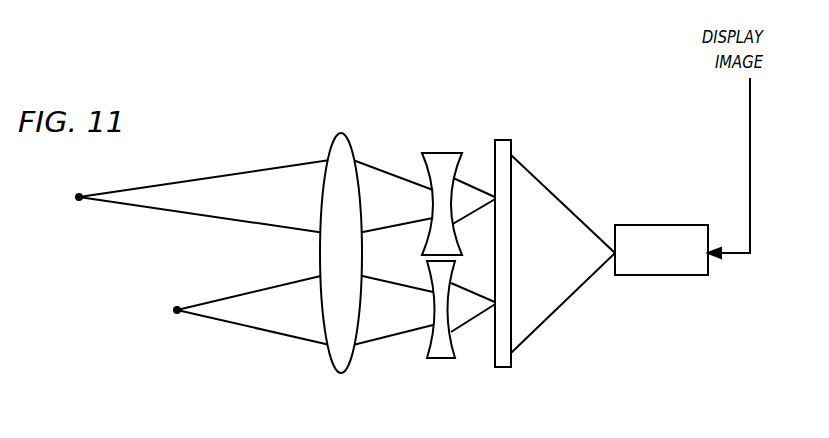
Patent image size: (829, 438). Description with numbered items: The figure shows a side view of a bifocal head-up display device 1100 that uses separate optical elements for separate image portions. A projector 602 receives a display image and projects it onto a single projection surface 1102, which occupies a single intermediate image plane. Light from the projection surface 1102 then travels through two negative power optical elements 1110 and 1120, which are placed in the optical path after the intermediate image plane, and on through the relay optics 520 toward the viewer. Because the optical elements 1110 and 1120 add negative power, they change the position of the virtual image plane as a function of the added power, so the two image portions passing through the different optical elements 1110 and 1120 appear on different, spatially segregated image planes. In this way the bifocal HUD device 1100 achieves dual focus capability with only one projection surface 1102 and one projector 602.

The bifocal HUD device 1100 is at (601, 372).
The relay optics 520 is at (351, 142).
The optical element 1110 is at (441, 153).
The optical element 1120 is at (440, 360).
The projection surface 1102 is at (504, 140).
The projector 602 is at (657, 225).